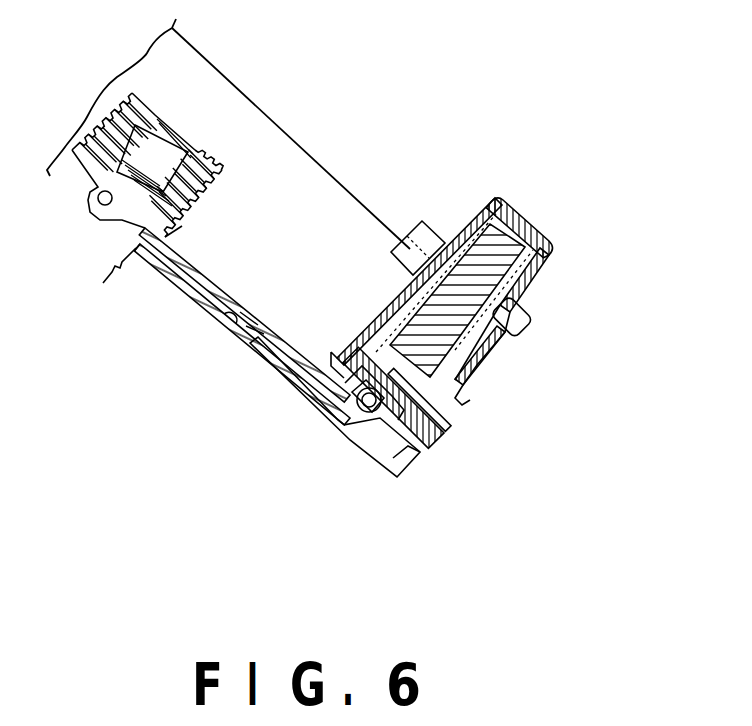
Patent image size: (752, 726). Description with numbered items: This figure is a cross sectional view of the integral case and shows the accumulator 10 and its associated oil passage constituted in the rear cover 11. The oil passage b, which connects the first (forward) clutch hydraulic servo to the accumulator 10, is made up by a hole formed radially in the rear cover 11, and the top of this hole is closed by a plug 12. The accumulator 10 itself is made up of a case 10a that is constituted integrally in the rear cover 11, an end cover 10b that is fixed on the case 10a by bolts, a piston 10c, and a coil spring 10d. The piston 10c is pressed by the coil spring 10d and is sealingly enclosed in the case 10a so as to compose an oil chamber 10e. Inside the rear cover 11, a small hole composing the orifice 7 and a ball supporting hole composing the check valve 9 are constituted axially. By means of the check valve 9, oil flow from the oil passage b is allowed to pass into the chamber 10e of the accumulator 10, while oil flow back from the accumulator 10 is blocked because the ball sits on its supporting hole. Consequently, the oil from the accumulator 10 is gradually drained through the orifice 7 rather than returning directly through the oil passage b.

The orifice 7 is at (363, 447).
The check valve 9 is at (347, 433).
The accumulator 10 is at (410, 283).
The case 10a is at (360, 307).
The end cover 10b is at (483, 210).
The piston 10c is at (467, 290).
The coil spring 10d is at (466, 404).
The oil chamber 10e is at (427, 433).
The rear cover 11 is at (190, 298).
The plug 12 is at (407, 470).
The oil passage b is at (233, 330).